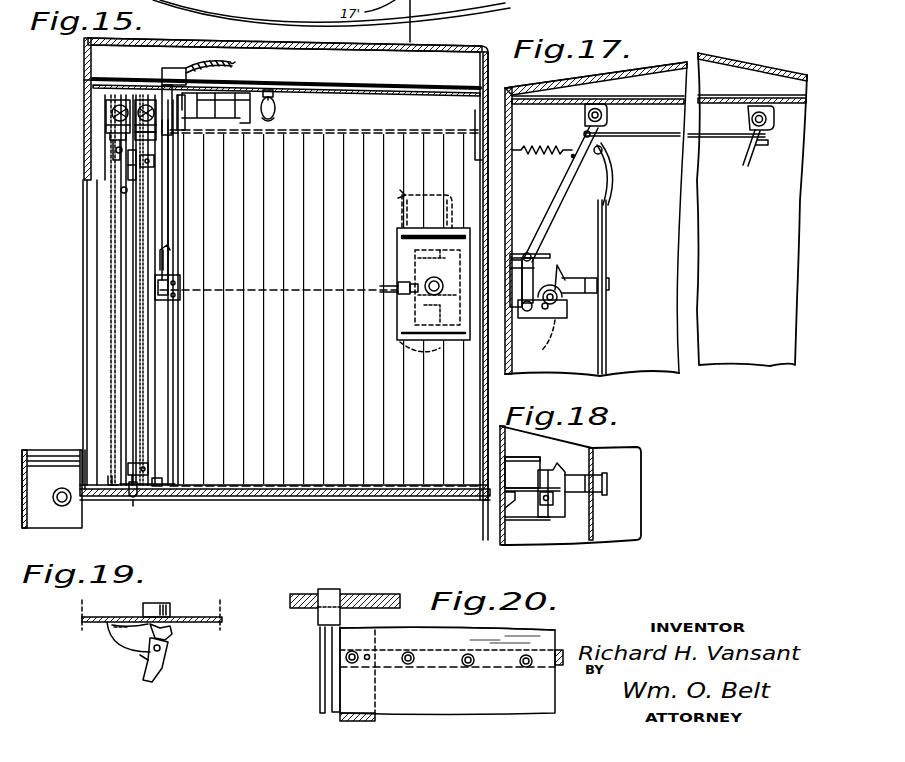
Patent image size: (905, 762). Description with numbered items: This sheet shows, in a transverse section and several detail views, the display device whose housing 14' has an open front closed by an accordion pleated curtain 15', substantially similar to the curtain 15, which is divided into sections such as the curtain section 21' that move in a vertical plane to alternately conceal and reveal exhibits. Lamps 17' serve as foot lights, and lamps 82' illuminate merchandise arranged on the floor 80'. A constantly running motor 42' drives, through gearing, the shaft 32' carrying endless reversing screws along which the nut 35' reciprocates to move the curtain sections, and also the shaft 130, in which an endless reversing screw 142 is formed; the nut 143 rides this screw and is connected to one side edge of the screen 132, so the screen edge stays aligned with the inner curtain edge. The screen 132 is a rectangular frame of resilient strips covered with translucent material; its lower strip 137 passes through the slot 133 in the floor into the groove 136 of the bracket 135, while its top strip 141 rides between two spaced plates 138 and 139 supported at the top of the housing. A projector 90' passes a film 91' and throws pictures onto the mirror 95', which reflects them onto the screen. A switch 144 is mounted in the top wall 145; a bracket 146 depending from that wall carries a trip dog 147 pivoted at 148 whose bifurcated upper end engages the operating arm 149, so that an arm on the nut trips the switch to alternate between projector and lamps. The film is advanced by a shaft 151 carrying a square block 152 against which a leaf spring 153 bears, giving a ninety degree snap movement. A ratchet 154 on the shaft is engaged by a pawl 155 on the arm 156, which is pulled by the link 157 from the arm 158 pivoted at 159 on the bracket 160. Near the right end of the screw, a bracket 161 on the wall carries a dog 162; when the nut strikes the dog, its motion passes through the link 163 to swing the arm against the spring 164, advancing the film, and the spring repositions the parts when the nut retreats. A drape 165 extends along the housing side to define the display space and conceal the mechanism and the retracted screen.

In FIG. 15, the housing 14' is at (266, 319).
In FIG. 17, the housing 14' is at (596, 58).
In FIG. 15, the curtain 15 is at (436, 21).
In FIG. 15, the curtain 15' is at (78, 290).
In FIG. 15, the lamps 17' is at (59, 482).
In FIG. 15, the curtain section 21' is at (72, 332).
In FIG. 15, the shaft 32' is at (82, 124).
In FIG. 15, the nut 35' is at (89, 111).
In FIG. 15, the motor 42' is at (226, 91).
In FIG. 15, the floor 80' is at (285, 515).
In FIG. 15, the lamps 82' is at (288, 105).
In FIG. 15, the projector 90' is at (411, 284).
In FIG. 17, the projector 90' is at (530, 256).
In FIG. 18, the projector 90' is at (532, 478).
In FIG. 15, the film 91' is at (416, 371).
In FIG. 15, the mirror 95' is at (425, 222).
In FIG. 15, the shaft 130 is at (147, 100).
In FIG. 20, the shaft 130 is at (380, 586).
In FIG. 15, the screen 132 is at (138, 385).
In FIG. 20, the screen 132 is at (428, 698).
In FIG. 15, the slot 133 is at (140, 482).
In FIG. 15, the bracket 135 is at (150, 496).
In FIG. 15, the groove 136 is at (132, 506).
In FIG. 17, the groove 136 is at (730, 8).
In FIG. 15, the lower strip 137 is at (112, 488).
In FIG. 15, the plate 138 is at (154, 160).
In FIG. 15, the plate 139 is at (113, 150).
In FIG. 15, the top strip 141 is at (140, 180).
In FIG. 20, the top strip 141 is at (558, 640).
In FIG. 20, the endless reversing screw 142 is at (302, 610).
In FIG. 15, the nut 143 is at (140, 100).
In FIG. 20, the nut 143 is at (330, 590).
In FIG. 15, the switch 144 is at (176, 67).
In FIG. 19, the switch 144 is at (157, 603).
In FIG. 15, the top wall 145 is at (190, 84).
In FIG. 17, the top wall 145 is at (655, 90).
In FIG. 19, the top wall 145 is at (200, 616).
In FIG. 19, the bracket 146 is at (110, 640).
In FIG. 15, the trip dog 147 is at (178, 135).
In FIG. 19, the trip dog 147 is at (163, 668).
In FIG. 19, the pivot 148 is at (147, 660).
In FIG. 19, the operating arm 149 is at (172, 634).
In FIG. 15, the shaft 151 is at (292, 290).
In FIG. 17, the shaft 151 is at (560, 316).
In FIG. 18, the shaft 151 is at (548, 506).
In FIG. 18, the square block 152 is at (557, 500).
In FIG. 18, the leaf spring 153 is at (535, 487).
In FIG. 15, the ratchet 154 is at (173, 300).
In FIG. 17, the ratchet 154 is at (566, 298).
In FIG. 17, the pawl 155 is at (545, 340).
In FIG. 17, the arm 156 is at (553, 285).
In FIG. 15, the link 157 is at (165, 270).
In FIG. 17, the link 157 is at (533, 268).
In FIG. 15, the arm 158 is at (170, 226).
In FIG. 17, the arm 158 is at (555, 198).
In FIG. 17, the pivot 159 is at (602, 117).
In FIG. 17, the bracket 160 is at (584, 117).
In FIG. 17, the bracket 161 is at (748, 120).
In FIG. 17, the dog 162 is at (750, 162).
In FIG. 17, the link 163 is at (650, 140).
In FIG. 17, the spring 164 is at (558, 148).
In FIG. 15, the drape 165 is at (343, 140).
In FIG. 17, the drape 165 is at (603, 287).
In FIG. 18, the drape 165 is at (595, 453).